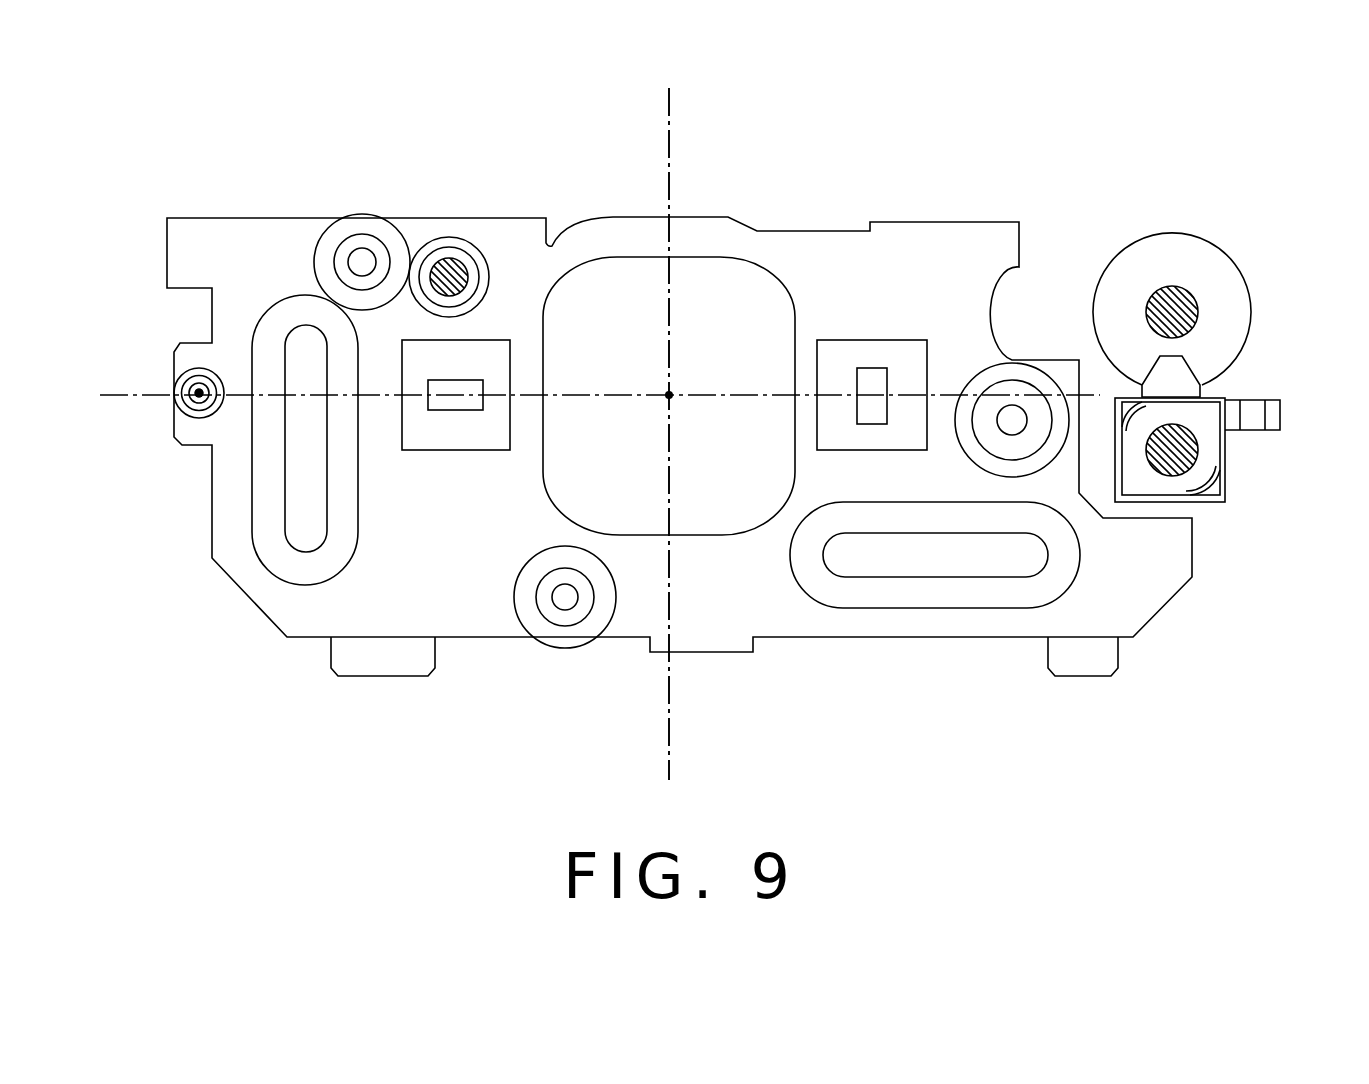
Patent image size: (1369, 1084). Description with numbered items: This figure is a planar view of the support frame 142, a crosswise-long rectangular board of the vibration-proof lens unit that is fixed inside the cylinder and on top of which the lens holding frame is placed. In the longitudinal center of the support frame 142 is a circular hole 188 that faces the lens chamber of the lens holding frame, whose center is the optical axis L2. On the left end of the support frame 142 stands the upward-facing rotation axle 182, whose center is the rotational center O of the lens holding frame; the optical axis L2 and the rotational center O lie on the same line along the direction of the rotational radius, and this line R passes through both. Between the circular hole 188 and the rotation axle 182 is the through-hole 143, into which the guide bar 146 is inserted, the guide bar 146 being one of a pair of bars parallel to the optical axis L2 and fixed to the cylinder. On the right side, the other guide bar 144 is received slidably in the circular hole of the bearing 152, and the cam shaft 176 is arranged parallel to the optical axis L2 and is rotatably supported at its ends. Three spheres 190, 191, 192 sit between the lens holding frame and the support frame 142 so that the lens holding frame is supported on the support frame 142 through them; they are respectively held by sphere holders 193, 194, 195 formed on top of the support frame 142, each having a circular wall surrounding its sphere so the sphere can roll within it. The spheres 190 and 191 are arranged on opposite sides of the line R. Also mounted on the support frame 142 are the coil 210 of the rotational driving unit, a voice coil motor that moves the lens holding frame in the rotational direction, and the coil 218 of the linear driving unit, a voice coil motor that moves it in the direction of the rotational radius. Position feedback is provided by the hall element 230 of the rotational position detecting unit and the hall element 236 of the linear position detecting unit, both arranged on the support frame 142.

The support frame 142 is at (202, 218).
The through-hole 143 is at (420, 278).
The guide bar 144 is at (1187, 452).
The guide bar 146 is at (452, 273).
The bearing 152 is at (1210, 503).
The cam shaft 176 is at (1213, 245).
The rotation axle 182 is at (198, 413).
The circular hole 188 is at (762, 469).
The sphere 190 is at (360, 250).
The sphere 191 is at (565, 605).
The sphere 192 is at (1020, 417).
The sphere holder 193 is at (320, 240).
The sphere holder 194 is at (523, 620).
The sphere holder 195 is at (985, 365).
The coil 210 is at (812, 595).
The coil 218 is at (252, 518).
The hall element 230 is at (873, 368).
The hall element 236 is at (468, 380).
The rotational center O is at (199, 392).
The optical axis L2 is at (669, 395).
The line R is at (615, 395).